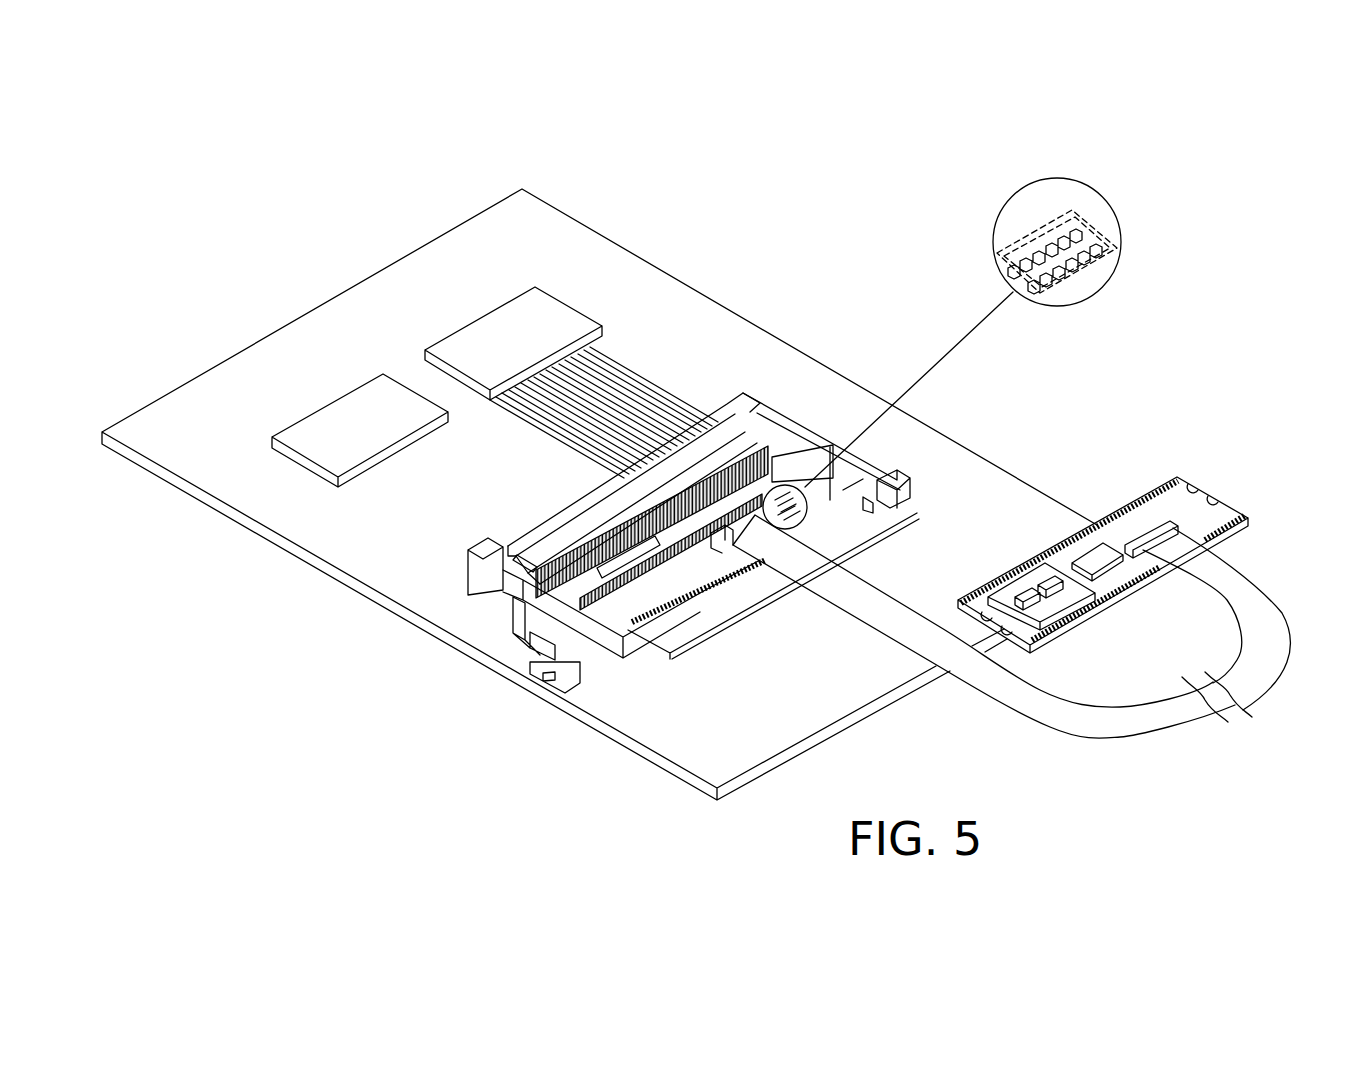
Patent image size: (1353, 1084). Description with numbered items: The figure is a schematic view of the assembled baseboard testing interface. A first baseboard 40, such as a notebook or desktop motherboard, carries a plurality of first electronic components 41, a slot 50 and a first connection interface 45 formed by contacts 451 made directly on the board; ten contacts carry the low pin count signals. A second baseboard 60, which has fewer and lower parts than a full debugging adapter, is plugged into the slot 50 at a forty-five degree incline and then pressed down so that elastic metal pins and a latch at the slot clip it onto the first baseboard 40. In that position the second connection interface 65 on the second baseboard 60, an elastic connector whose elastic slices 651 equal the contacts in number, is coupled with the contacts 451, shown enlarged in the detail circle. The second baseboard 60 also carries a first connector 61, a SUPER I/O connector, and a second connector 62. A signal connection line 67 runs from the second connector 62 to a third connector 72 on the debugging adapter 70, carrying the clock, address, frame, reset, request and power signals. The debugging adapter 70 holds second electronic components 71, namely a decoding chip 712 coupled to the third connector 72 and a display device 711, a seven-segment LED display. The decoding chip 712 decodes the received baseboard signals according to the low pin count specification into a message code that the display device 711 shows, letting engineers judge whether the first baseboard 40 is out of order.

The first baseboard 40 is at (670, 293).
The first electronic components 41 is at (490, 327).
The first connection interface 45 is at (775, 425).
The contacts 451 is at (817, 530).
The slot 50 is at (827, 465).
The second baseboard 60 is at (848, 468).
The first connector 61 is at (695, 639).
The second connector 62 is at (718, 560).
The second connection interface 65 is at (770, 483).
The elastic slices 651 is at (830, 485).
The signal connection line 67 is at (1262, 620).
The debugging adapter 70 is at (1103, 549).
The second electronic components 71 is at (1000, 570).
The display device 711 is at (1053, 603).
The decoding chip 712 is at (1110, 560).
The third connector 72 is at (1158, 533).